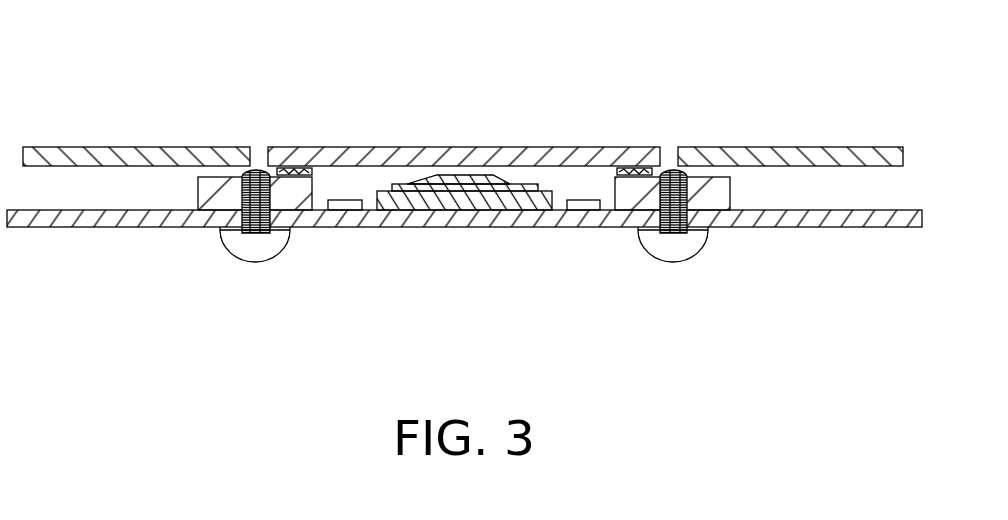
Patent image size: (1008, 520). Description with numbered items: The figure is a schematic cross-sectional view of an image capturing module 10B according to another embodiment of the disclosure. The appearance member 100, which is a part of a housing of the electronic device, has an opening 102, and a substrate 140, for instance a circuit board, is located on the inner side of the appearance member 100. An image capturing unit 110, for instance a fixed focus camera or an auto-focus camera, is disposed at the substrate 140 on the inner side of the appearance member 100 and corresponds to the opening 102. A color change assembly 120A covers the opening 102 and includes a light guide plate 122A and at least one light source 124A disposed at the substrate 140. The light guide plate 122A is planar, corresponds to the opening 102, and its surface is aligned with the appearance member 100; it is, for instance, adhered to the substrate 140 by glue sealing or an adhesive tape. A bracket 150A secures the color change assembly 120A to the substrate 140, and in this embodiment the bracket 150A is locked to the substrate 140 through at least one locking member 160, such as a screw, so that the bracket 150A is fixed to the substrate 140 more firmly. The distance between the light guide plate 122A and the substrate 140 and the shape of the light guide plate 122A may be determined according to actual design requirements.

The image capturing module 10B is at (117, 87).
The appearance member 100 is at (707, 147).
The opening 102 is at (255, 153).
The image capturing unit 110 is at (458, 185).
The color change assembly 120A is at (464, 183).
The light guide plate 122A is at (468, 155).
The light source 124A is at (348, 205).
The substrate 140 is at (110, 224).
The bracket 150A is at (215, 198).
The locking member 160 is at (257, 248).